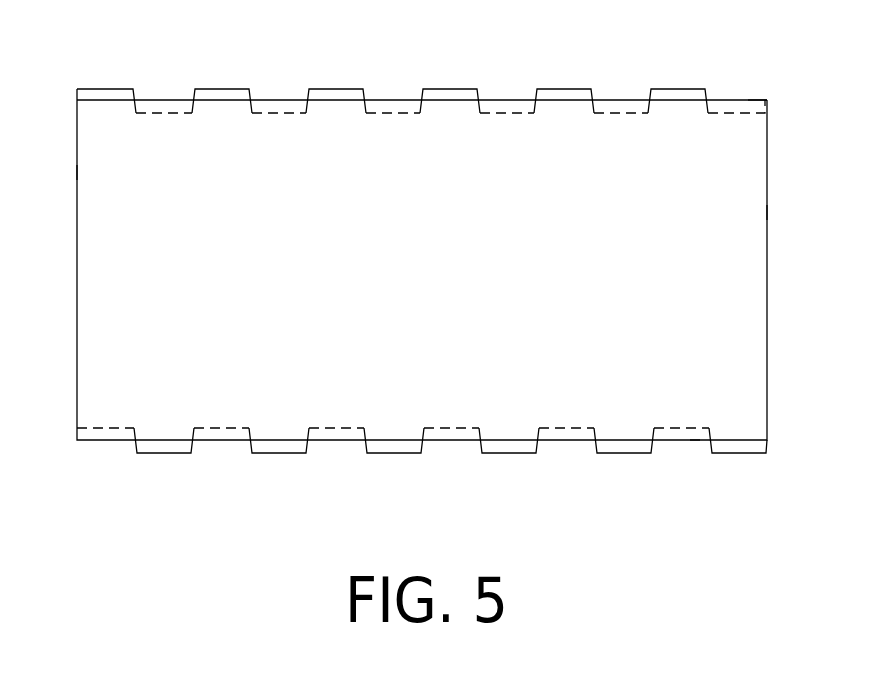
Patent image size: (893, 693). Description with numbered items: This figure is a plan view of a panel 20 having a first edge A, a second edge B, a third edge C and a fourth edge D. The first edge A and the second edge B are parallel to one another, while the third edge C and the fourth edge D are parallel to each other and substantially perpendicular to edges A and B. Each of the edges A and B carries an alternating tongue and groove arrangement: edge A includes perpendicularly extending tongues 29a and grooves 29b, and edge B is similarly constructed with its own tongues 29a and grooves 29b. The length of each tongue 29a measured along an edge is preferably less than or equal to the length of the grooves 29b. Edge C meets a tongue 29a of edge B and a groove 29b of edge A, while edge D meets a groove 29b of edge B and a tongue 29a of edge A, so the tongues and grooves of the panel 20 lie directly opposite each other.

The panel 20 is at (402, 265).
The tongue 29a is at (100, 88).
The groove 29b is at (170, 110).
The first edge A is at (695, 441).
The second edge B is at (753, 100).
The third edge C is at (77, 173).
The fourth edge D is at (768, 212).